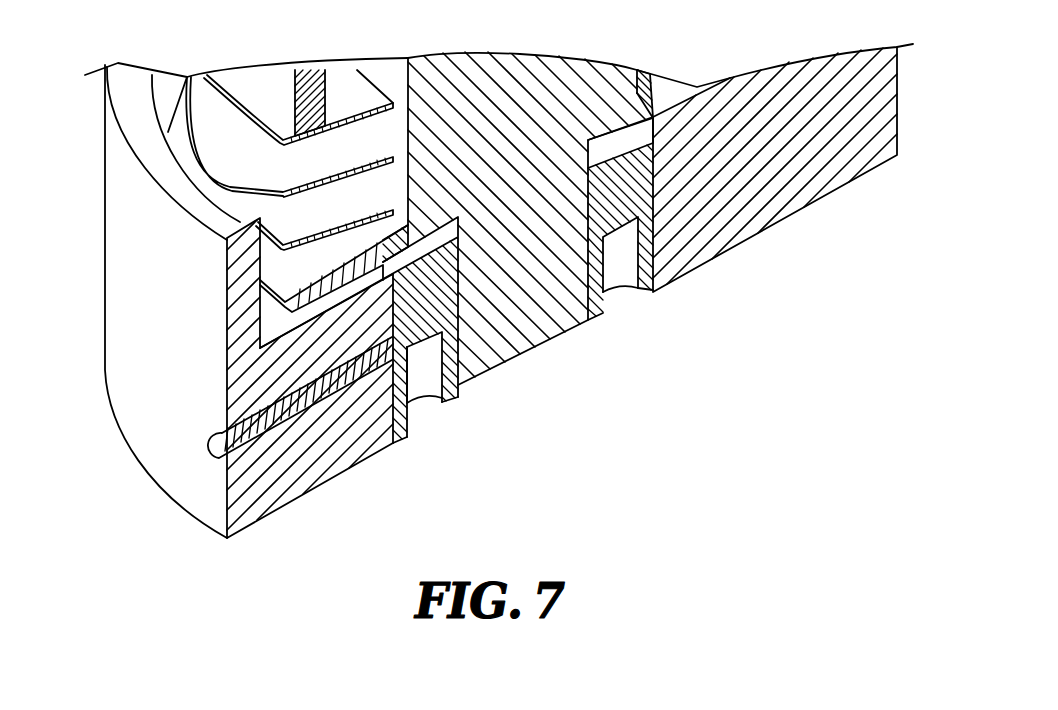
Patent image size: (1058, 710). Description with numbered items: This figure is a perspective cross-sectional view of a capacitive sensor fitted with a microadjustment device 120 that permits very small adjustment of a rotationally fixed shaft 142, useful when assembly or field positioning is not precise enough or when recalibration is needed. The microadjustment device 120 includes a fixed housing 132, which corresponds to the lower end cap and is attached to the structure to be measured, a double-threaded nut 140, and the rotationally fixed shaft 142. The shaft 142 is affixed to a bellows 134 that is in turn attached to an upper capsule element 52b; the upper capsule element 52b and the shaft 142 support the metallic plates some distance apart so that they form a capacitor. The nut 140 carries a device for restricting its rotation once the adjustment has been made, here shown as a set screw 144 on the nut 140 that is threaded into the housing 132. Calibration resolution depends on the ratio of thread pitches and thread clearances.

The upper capsule element 52b is at (307, 78).
The bellows 134 is at (263, 158).
The microadjustment device 120 is at (635, 318).
The fixed housing 132 is at (310, 455).
The double-threaded nut 140 is at (420, 405).
The rotationally fixed shaft 142 is at (489, 343).
The set screw 144 is at (443, 290).